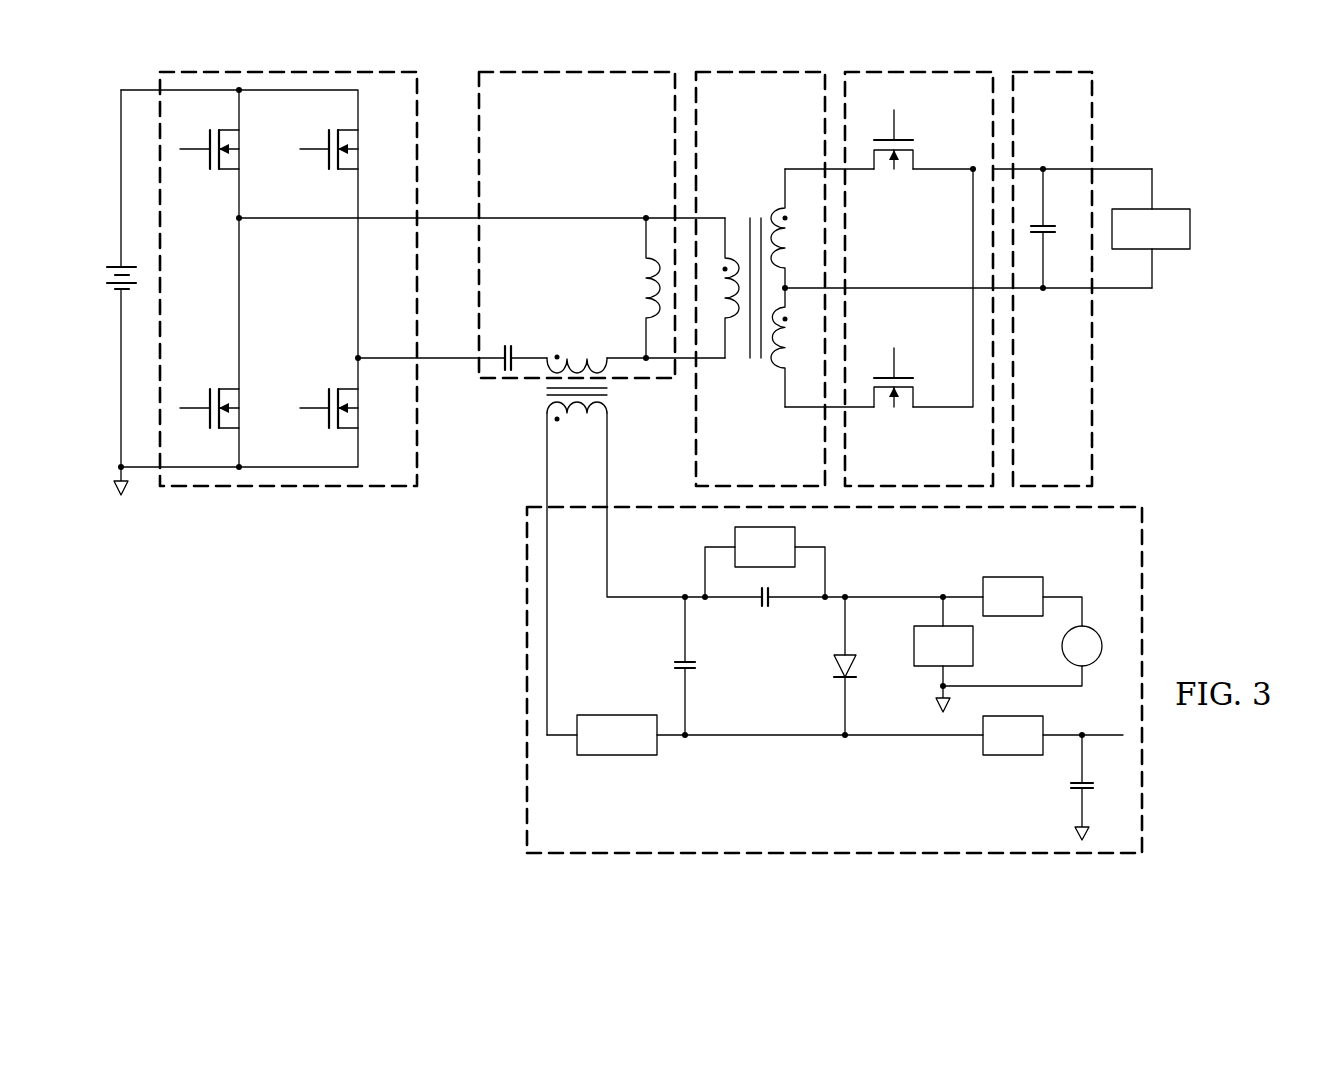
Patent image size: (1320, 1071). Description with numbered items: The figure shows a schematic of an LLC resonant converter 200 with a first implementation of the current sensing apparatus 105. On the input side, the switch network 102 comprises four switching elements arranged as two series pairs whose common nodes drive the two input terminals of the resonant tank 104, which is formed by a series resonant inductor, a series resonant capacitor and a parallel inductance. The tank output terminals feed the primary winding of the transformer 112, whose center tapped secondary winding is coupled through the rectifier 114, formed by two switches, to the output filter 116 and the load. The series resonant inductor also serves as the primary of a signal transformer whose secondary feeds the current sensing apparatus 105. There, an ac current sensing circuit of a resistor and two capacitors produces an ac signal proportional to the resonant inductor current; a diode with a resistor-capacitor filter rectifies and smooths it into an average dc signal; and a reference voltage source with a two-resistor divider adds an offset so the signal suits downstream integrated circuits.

The LLC resonant power converter 200 is at (1198, 114).
The switch network 102 is at (217, 286).
The resonant tank 104 is at (594, 111).
The current sensing apparatus 105 is at (781, 809).
The transformer 112 is at (776, 111).
The rectifier 114 is at (959, 111).
The output filter 116 is at (1068, 111).